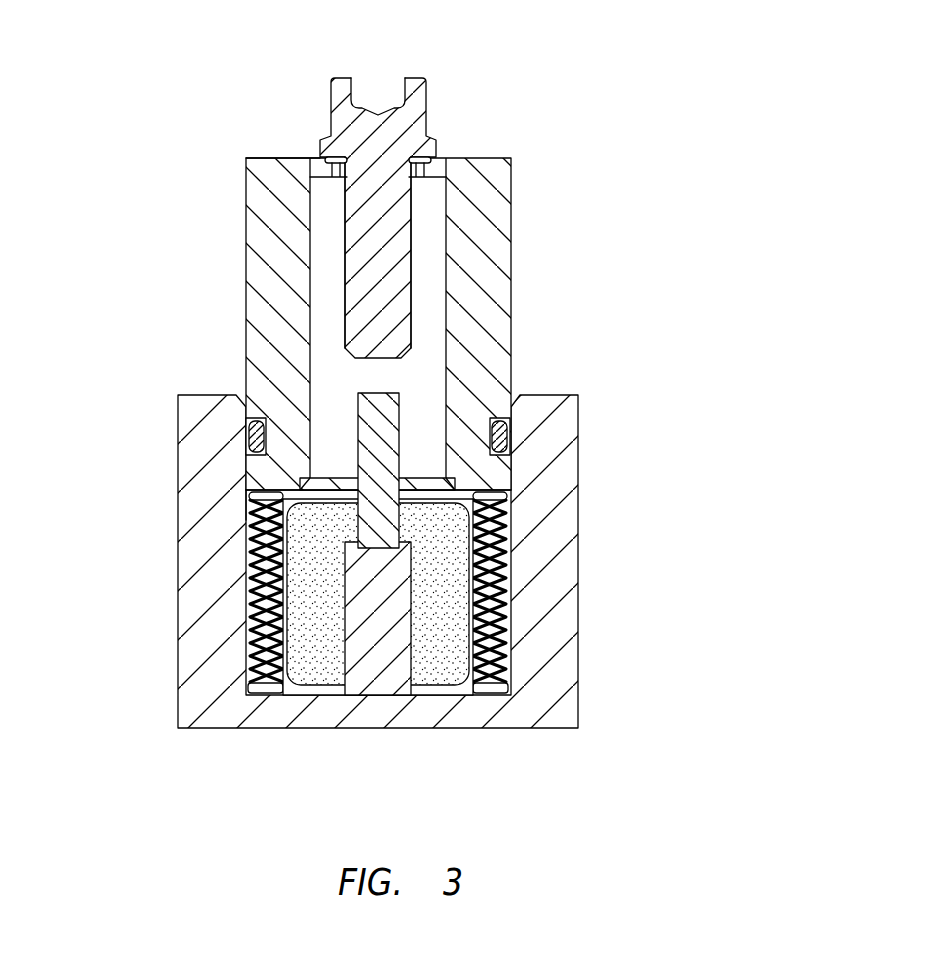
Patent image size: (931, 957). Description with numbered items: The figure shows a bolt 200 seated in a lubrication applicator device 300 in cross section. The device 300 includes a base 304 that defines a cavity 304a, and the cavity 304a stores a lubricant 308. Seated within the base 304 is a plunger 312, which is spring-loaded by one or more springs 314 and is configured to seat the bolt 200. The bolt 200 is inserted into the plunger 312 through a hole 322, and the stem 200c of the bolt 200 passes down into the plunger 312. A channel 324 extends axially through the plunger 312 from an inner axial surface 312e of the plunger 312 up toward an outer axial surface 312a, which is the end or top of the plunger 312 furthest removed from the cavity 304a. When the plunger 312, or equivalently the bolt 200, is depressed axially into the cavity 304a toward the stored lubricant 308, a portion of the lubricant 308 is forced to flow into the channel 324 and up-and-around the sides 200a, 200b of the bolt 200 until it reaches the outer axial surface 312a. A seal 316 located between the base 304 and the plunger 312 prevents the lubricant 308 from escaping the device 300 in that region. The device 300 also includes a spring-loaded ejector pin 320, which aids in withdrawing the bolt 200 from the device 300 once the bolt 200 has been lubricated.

The bolt 200 is at (378, 184).
The side of the bolt 200a is at (341, 257).
The side of the bolt 200b is at (414, 262).
The stem of the bolt 200c is at (378, 301).
The lubrication applicator device 300 is at (413, 404).
The base 304 is at (214, 624).
The cavity 304a is at (246, 500).
The lubricant 308 is at (375, 644).
The plunger 312 is at (267, 291).
The outer axial surface of the plunger 312a is at (268, 157).
The inner axial surface of the plunger 312e is at (500, 516).
The spring 314 is at (488, 695).
The seal 316 is at (244, 434).
The spring-loaded ejector pin 320 is at (355, 622).
The hole 322 is at (430, 167).
The channel 324 is at (416, 375).